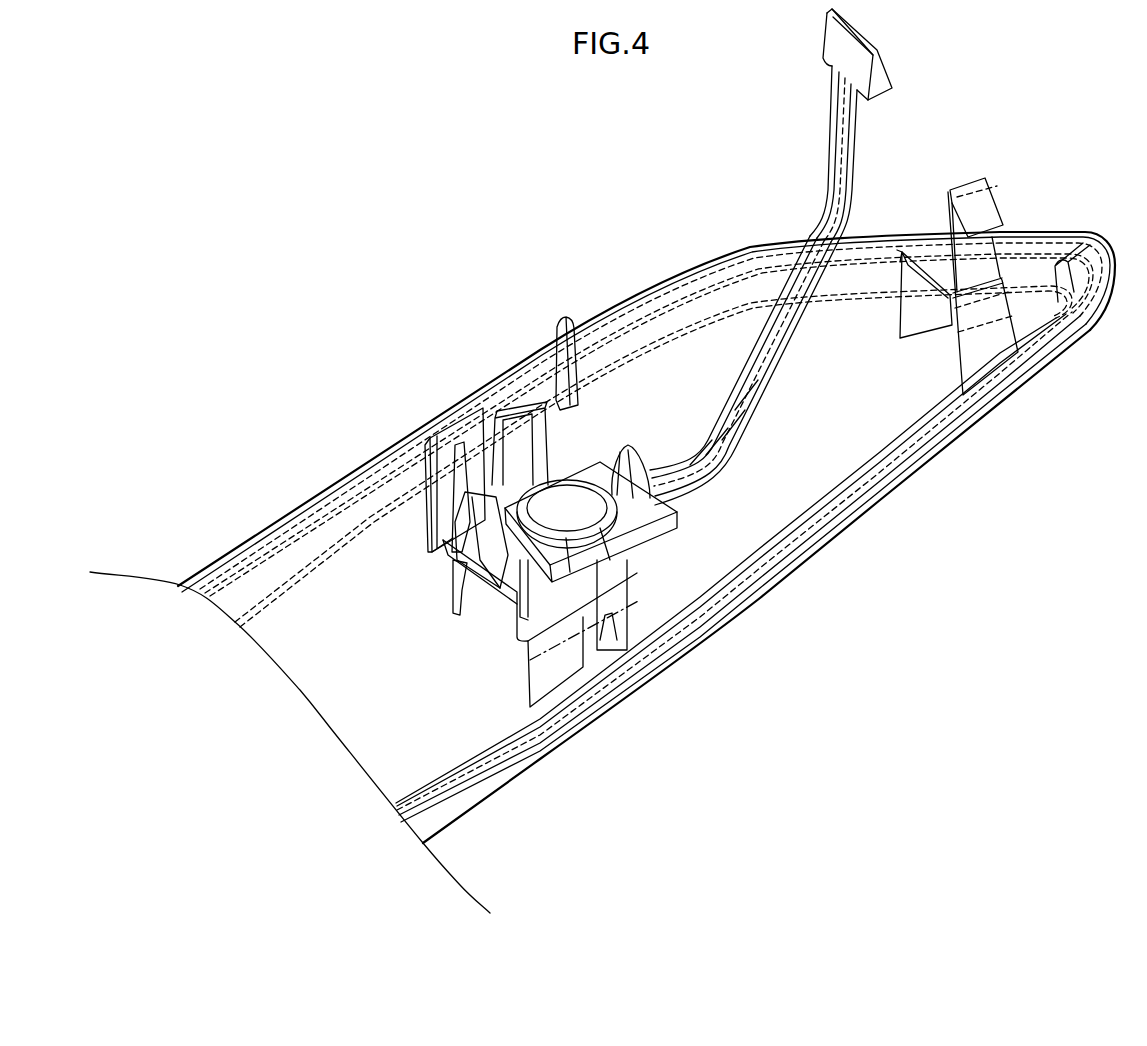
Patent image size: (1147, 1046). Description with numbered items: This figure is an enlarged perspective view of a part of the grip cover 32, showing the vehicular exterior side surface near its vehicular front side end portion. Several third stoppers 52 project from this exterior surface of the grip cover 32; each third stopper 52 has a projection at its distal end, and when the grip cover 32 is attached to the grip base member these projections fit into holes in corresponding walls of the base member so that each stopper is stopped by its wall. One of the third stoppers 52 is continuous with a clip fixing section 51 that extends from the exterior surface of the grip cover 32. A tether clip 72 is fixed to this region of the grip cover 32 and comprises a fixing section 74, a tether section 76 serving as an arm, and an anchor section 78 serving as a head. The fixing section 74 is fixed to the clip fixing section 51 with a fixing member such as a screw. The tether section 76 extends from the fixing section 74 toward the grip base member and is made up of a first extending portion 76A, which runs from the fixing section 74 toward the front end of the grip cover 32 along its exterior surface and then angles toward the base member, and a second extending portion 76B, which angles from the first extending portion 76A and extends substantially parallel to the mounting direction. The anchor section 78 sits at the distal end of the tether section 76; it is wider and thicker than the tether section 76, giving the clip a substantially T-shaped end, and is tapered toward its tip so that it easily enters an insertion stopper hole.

The grip cover 32 is at (737, 638).
The clip fixing section 51 is at (553, 670).
The third stoppers 52 is at (468, 525).
The tether clip 72 is at (800, 86).
The fixing section 74 is at (597, 480).
The tether section 76 is at (692, 126).
The first extending portion 76A is at (783, 272).
The second extending portion 76B is at (828, 128).
The anchor section 78 is at (858, 29).